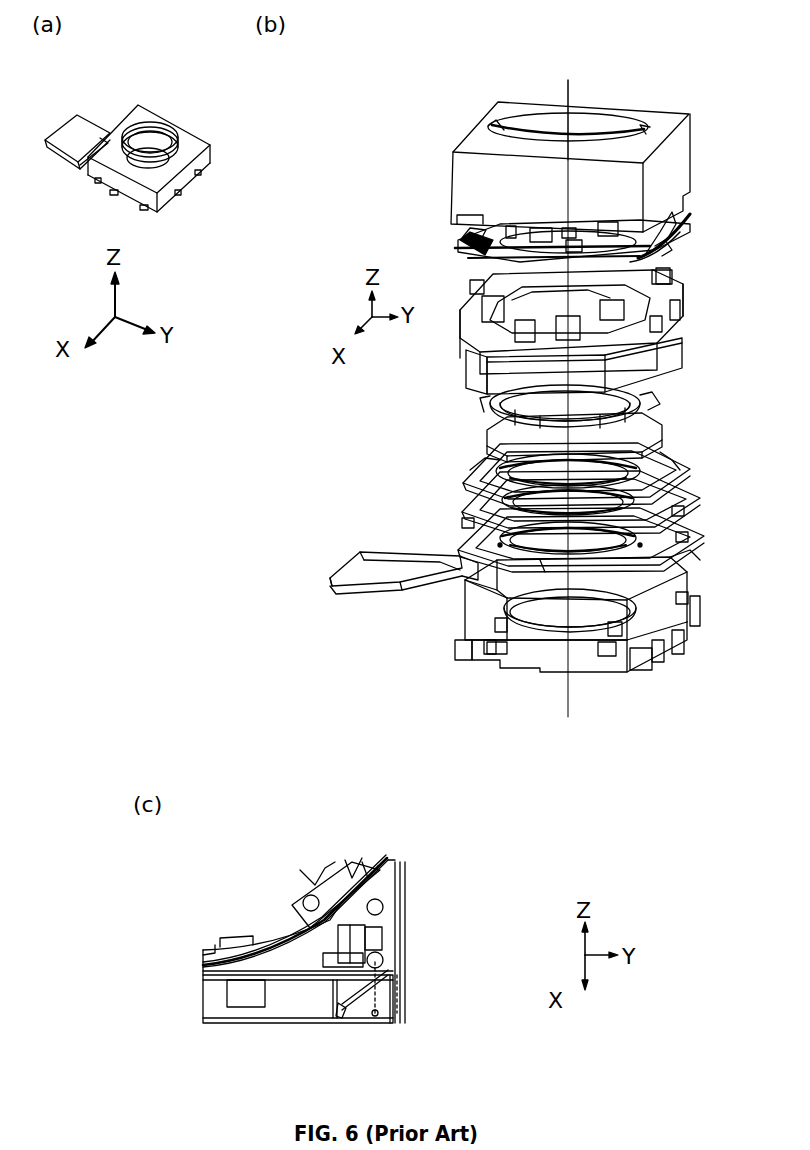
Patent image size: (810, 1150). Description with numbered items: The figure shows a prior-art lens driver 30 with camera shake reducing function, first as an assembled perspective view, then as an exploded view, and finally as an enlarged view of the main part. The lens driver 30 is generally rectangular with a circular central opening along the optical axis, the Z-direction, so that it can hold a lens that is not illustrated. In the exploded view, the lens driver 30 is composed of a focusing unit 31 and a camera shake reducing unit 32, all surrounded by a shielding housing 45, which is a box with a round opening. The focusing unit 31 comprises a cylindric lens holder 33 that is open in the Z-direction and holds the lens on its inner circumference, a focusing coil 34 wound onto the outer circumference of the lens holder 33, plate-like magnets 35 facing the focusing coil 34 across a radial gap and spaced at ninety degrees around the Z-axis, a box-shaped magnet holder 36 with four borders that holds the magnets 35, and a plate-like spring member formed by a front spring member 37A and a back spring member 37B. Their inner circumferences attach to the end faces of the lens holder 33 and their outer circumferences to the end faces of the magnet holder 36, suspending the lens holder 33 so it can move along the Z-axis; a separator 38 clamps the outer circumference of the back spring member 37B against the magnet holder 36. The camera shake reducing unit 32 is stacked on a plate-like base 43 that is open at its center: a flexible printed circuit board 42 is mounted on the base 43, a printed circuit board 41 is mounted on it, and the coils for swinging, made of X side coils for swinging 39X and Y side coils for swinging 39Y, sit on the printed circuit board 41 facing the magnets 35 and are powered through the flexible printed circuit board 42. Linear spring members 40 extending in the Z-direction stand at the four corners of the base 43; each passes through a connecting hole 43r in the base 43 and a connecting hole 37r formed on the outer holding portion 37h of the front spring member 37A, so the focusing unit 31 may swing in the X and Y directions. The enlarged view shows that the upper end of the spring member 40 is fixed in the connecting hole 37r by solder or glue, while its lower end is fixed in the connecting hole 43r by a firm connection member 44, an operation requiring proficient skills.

The lens driver with camera shake reducing function 30 is at (135, 117).
The focusing unit 31 is at (774, 181).
The camera shake reducing unit 32 is at (360, 470).
The lens holder 33 is at (654, 405).
The focusing coil 34 is at (660, 432).
The magnet 35 is at (672, 353).
The magnet holder 36 is at (680, 303).
The front spring member 37A is at (660, 240).
The back spring member 37B is at (672, 462).
The outer holding portion 37h is at (664, 256).
The connecting hole 37r is at (672, 278).
The separator 38 is at (700, 503).
The X side coils for swinging 39X is at (684, 512).
The Y side coils for swinging 39Y is at (686, 540).
The linear spring member 40 is at (466, 600).
The printed circuit board 41 is at (472, 540).
The flexible printed circuit board 42 is at (398, 574).
The base 43 is at (478, 655).
The connecting hole 43r is at (490, 655).
The firm connection member 44 is at (405, 977).
The shielding housing 45 is at (648, 116).